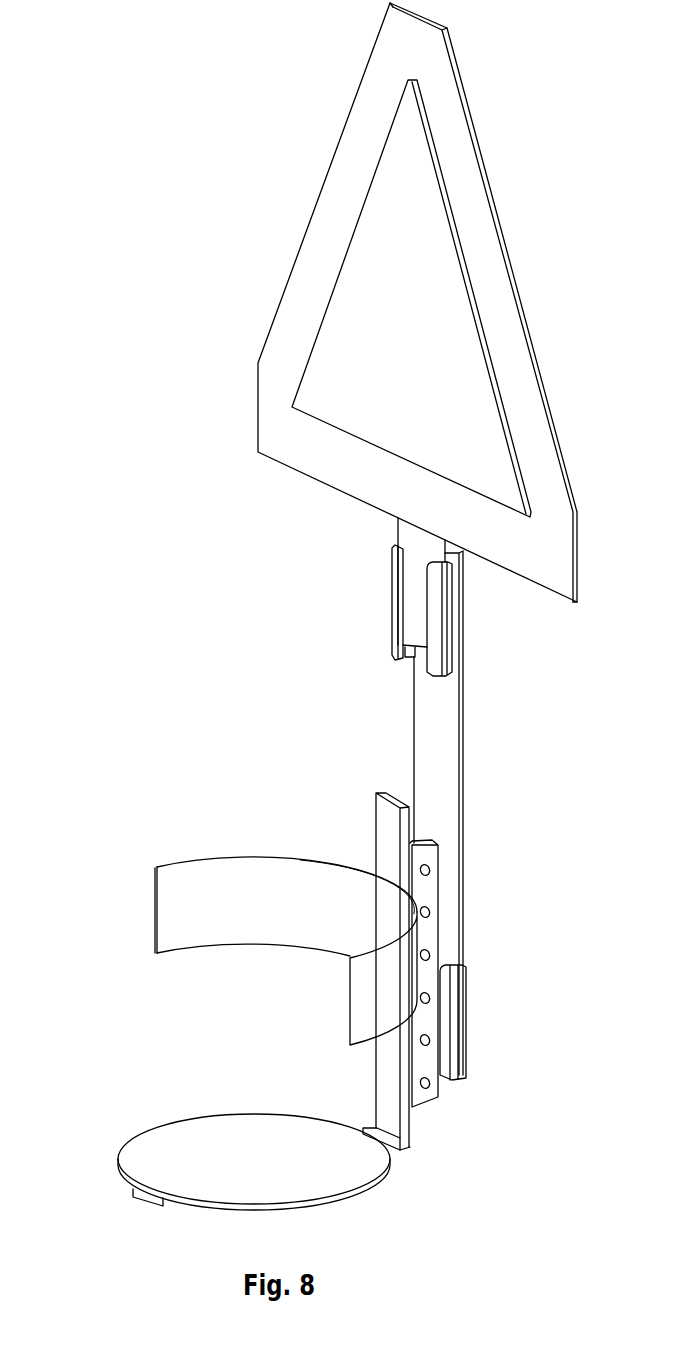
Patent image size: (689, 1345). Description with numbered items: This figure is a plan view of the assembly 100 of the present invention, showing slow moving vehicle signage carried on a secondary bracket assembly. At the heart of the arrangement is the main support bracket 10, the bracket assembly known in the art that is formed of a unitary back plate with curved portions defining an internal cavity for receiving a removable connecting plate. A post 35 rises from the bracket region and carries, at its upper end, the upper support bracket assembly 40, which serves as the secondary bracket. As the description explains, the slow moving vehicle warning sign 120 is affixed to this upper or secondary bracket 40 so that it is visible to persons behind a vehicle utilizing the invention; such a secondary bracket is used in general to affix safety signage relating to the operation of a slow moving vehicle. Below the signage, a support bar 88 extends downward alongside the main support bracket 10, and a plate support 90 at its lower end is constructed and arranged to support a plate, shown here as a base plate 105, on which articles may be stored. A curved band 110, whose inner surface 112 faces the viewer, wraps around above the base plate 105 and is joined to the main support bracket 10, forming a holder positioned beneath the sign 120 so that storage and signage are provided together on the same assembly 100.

The assembly 100 is at (250, 773).
The slow moving vehicle warning sign 120 is at (317, 263).
The upper support bracket assembly 40 is at (400, 602).
The post 35 is at (439, 749).
The support bar 88 is at (378, 790).
The band 110 is at (155, 908).
The inner surface of band 112 is at (270, 882).
The main support bracket 10 is at (453, 1028).
The base disc 105 is at (285, 1137).
The plate support 90 is at (403, 1152).